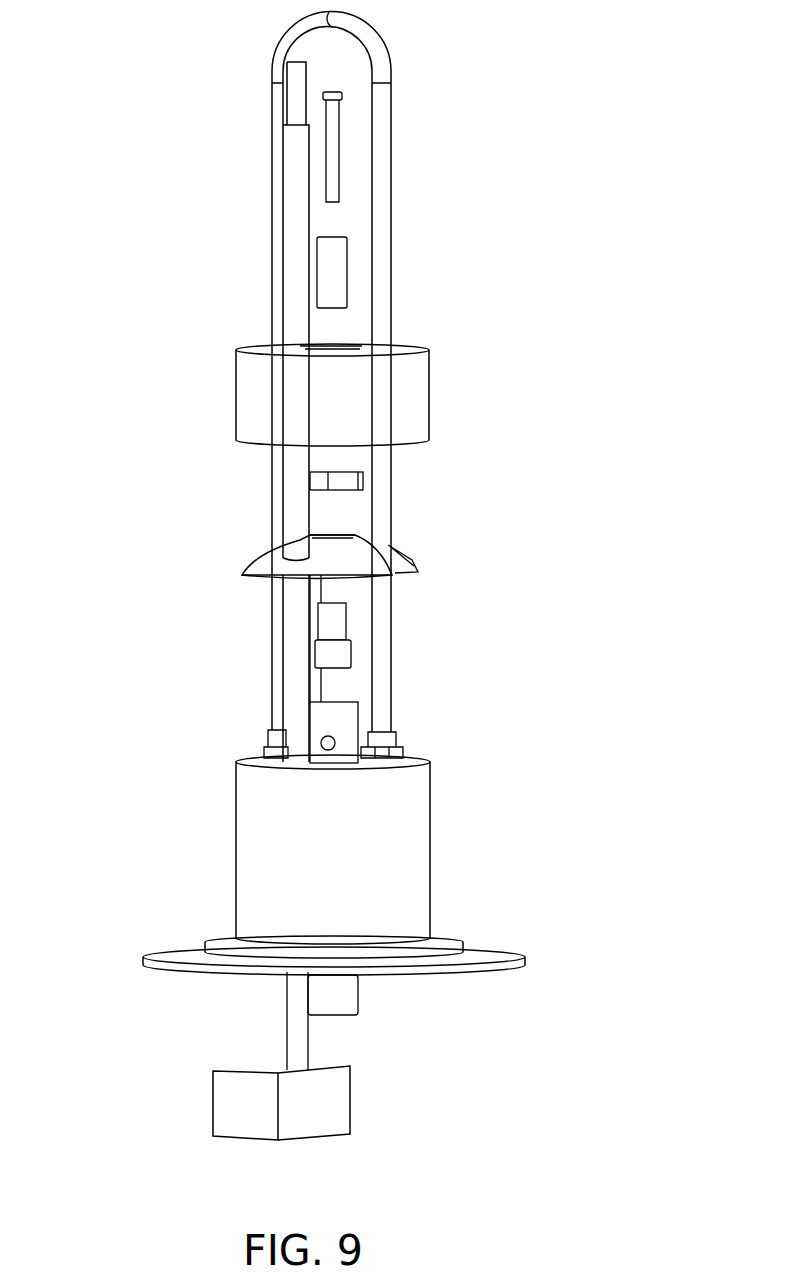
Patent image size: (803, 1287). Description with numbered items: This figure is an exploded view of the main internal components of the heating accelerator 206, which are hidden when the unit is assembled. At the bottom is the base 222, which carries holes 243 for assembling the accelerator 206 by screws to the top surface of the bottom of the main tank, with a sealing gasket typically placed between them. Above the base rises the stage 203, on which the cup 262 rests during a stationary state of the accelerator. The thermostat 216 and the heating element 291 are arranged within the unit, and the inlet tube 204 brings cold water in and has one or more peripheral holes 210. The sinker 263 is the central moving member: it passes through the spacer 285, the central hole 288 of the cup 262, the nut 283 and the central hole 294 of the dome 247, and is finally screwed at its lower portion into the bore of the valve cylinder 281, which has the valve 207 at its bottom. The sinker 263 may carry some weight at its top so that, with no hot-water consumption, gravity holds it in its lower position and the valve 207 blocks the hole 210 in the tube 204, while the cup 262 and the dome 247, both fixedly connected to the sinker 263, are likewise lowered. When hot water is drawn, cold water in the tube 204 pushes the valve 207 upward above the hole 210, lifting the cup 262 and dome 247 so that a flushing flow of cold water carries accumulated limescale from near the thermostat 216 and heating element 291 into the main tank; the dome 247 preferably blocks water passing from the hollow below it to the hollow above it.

The accelerator 206 is at (538, 306).
The heating element 291 is at (367, 42).
The thermostat 216 is at (290, 155).
The sinker 263 is at (330, 163).
The spacer 285 is at (333, 280).
The central hole 288 is at (332, 348).
The cup 262 is at (248, 405).
The nut 283 is at (355, 481).
The central hole 294 is at (332, 535).
The dome 247 is at (418, 567).
The valve cylinder 281 is at (333, 617).
The valve 207 is at (330, 660).
The inlet tube 204 is at (332, 723).
The peripheral hole 210 is at (340, 740).
The stage 203 is at (253, 847).
The holes 243 is at (480, 950).
The base 222 is at (512, 950).